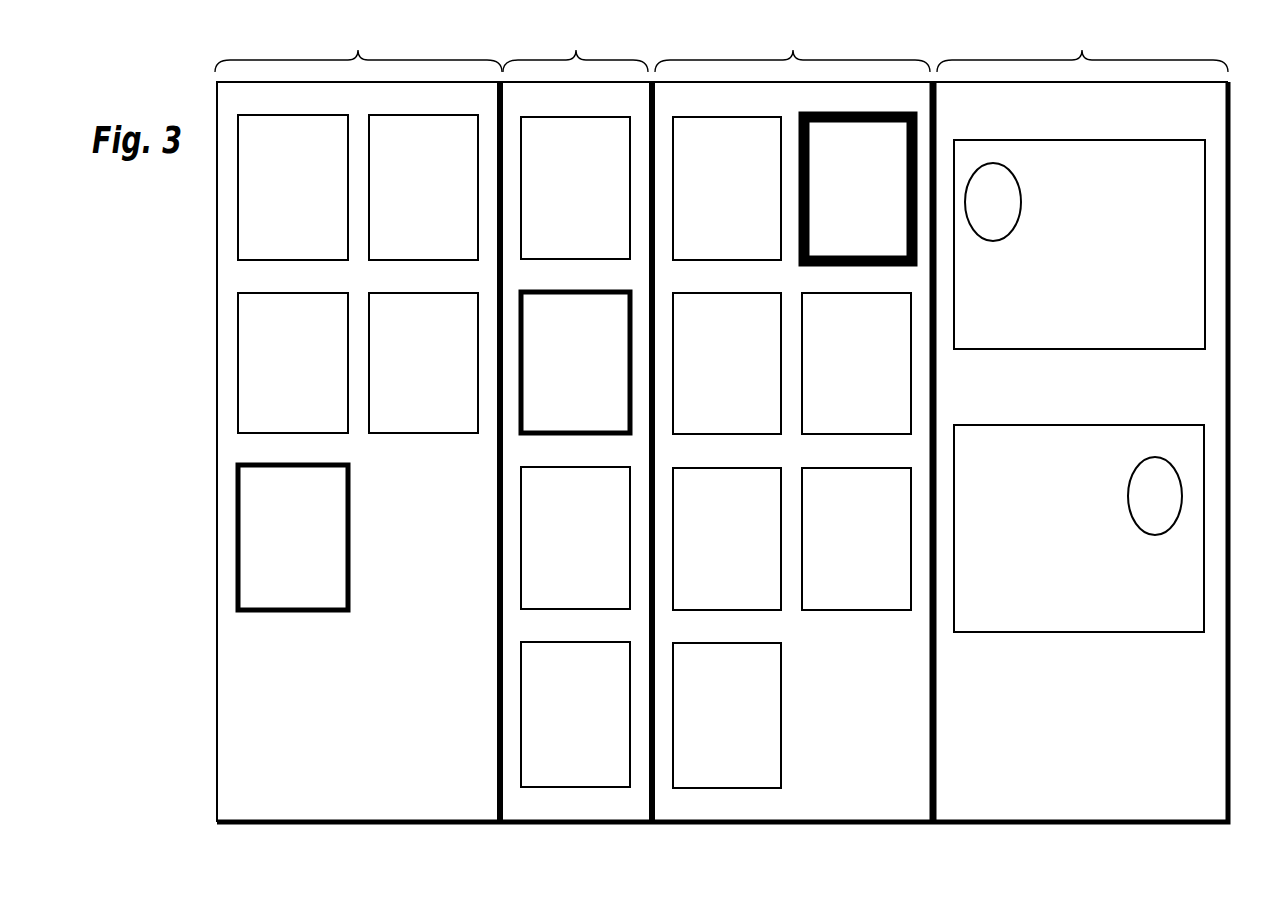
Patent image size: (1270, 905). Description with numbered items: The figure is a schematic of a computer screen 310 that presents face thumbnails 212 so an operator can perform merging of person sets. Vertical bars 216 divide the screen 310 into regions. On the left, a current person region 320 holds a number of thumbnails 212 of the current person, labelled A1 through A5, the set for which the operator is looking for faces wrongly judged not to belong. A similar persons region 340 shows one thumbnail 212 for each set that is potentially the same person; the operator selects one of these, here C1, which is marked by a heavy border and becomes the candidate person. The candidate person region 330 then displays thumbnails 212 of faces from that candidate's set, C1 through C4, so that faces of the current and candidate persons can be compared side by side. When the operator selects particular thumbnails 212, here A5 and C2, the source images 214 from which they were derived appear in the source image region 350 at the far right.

The computer screen 310 is at (706, 452).
The current person region 320 is at (358, 49).
The candidate person region 330 is at (575, 49).
The similar persons region 340 is at (792, 49).
The source image region 350 is at (1082, 49).
The face thumbnails 212 is at (575, 440).
The source images 214 is at (1079, 375).
The vertical bars 216 is at (497, 757).